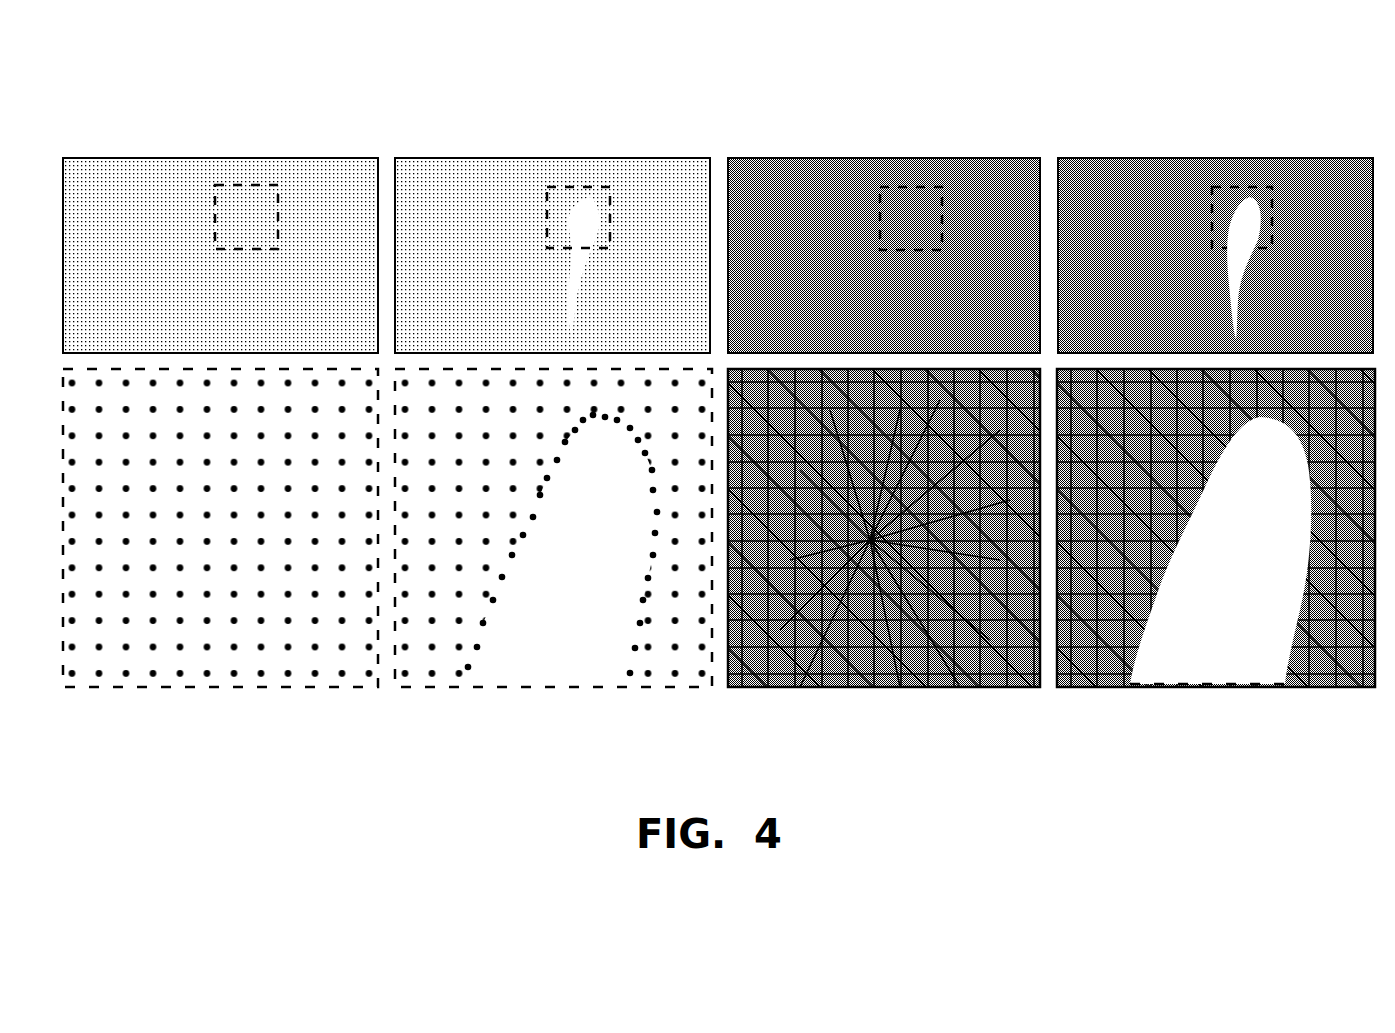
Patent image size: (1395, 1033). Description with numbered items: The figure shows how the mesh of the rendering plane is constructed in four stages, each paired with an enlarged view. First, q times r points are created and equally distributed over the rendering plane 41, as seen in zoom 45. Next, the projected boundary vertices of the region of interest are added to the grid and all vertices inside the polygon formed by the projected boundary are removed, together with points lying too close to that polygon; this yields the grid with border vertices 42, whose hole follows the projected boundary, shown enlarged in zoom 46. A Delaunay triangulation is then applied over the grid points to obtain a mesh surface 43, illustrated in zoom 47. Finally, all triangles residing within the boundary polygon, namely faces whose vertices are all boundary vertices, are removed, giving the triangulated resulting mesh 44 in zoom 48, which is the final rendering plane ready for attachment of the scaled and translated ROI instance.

The rendering plane with equally distributed grid points 41 is at (228, 138).
The grid with border vertices 42 is at (544, 138).
The mesh surface from Delaunay triangulation 43 is at (873, 138).
The triangulated resulting mesh 44 is at (1209, 138).
The zoom of equally distributed grid points 45 is at (233, 705).
The zoom of grid with border vertices 46 is at (549, 705).
The zoom of Delaunay-triangulated mesh 47 is at (878, 705).
The zoom of triangulated resulting mesh 48 is at (1214, 705).